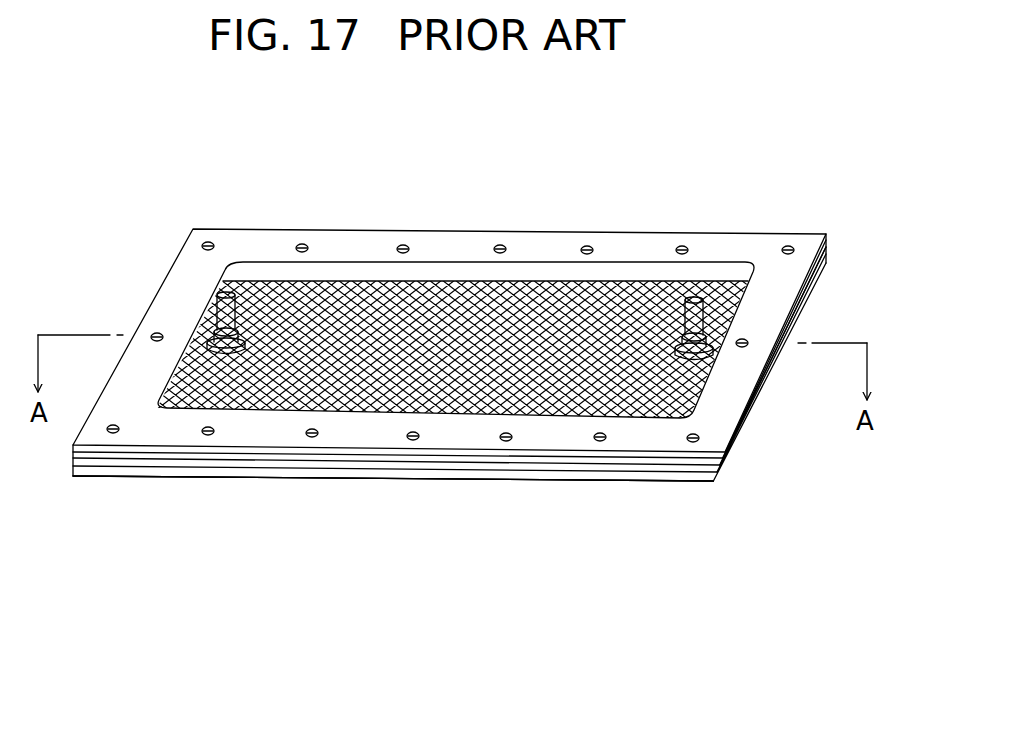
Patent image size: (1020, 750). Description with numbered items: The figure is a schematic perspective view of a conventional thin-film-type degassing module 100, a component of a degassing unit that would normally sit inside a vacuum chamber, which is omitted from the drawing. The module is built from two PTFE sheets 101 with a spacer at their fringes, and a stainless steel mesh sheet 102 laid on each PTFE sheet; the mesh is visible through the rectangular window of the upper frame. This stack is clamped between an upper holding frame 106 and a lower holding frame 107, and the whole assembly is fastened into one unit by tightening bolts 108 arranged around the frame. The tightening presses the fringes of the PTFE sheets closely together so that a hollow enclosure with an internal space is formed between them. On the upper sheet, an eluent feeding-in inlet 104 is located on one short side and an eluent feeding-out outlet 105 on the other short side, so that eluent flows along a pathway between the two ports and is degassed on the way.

The degassing module 100 is at (675, 225).
The PTFE sheet 101 is at (322, 325).
The stainless steel mesh sheet 102 is at (368, 283).
The eluent feeding-in inlet 104 is at (223, 318).
The eluent feeding-out outlet 105 is at (693, 325).
The upper holding frame 106 is at (785, 283).
The lower holding frame 107 is at (677, 485).
The tightening bolts 108 is at (218, 240).